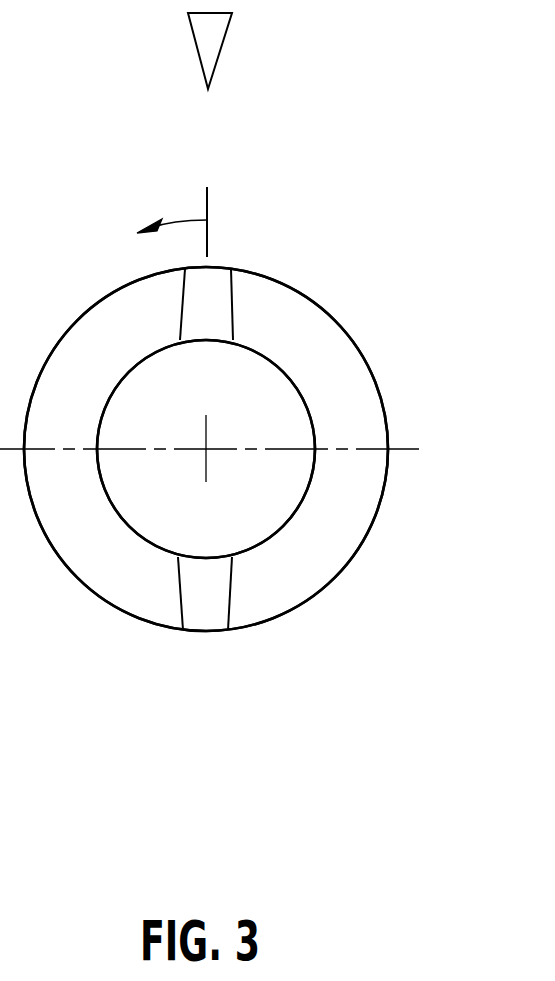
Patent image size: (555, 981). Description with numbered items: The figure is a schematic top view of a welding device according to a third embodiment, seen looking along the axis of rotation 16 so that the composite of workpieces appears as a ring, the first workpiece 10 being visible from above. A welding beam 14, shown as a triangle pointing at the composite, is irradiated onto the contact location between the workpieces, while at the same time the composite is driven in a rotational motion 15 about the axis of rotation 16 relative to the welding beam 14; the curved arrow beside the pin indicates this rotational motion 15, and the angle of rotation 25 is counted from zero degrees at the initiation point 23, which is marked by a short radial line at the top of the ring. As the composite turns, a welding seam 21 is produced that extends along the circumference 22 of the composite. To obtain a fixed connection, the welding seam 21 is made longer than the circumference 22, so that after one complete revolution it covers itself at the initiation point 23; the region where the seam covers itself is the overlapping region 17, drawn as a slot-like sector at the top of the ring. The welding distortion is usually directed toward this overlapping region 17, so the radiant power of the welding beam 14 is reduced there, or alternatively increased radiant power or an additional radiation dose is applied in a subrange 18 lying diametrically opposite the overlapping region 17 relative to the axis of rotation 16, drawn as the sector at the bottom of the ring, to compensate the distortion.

The first workpiece 10 is at (348, 385).
The welding beam 14 is at (215, 30).
The rotational motion 15 is at (157, 155).
The angle of rotation 25 is at (180, 220).
The axis of rotation 16 is at (205, 450).
The overlapping region 17 is at (212, 318).
The subrange 18 is at (207, 608).
The welding seam 21 is at (267, 476).
The circumference 22 is at (345, 567).
The initiation point 23 is at (210, 203).